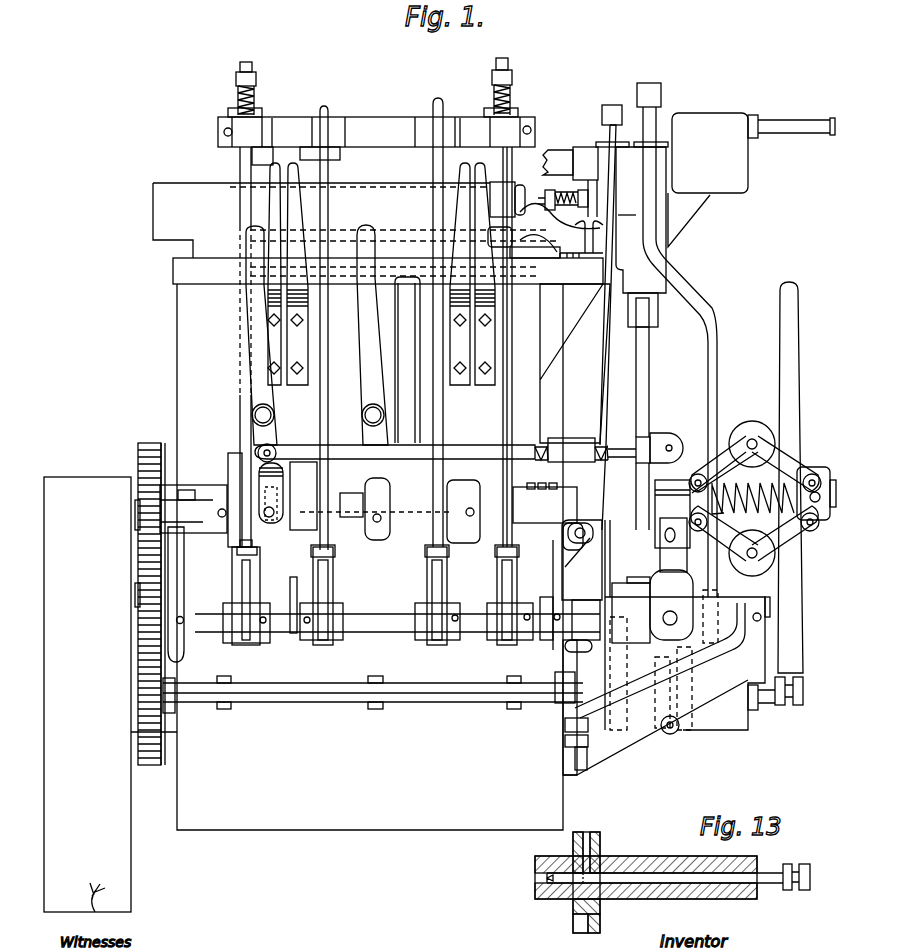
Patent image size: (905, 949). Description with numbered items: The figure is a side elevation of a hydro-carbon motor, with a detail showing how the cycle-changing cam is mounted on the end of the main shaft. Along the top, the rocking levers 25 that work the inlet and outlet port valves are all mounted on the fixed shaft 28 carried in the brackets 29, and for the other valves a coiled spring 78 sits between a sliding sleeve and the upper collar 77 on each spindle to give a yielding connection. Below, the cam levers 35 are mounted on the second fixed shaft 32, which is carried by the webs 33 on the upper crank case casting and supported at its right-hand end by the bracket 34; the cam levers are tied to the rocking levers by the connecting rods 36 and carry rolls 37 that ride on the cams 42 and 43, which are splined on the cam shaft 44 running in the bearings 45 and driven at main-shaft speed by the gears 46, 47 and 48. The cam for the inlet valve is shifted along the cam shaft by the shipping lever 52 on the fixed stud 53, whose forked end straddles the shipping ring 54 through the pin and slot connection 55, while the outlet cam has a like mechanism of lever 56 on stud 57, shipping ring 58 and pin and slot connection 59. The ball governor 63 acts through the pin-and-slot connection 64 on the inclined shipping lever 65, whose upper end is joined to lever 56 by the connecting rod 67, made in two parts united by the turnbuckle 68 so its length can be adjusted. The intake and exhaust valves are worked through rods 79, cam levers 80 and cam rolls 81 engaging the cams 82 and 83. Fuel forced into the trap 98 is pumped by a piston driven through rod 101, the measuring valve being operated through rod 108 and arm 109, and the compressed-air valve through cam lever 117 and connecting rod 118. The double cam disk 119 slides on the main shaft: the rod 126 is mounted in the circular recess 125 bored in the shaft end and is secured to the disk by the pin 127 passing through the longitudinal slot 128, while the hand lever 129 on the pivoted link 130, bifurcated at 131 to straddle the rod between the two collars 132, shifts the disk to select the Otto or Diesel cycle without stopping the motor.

In FIG. 1, the rocking levers 25 is at (328, 108).
In FIG. 1, the fixed shaft 28 is at (370, 135).
In FIG. 1, the brackets 29 is at (376, 132).
In FIG. 1, the fixed shaft 32 is at (397, 618).
In FIG. 1, the webs 33 is at (183, 595).
In FIG. 1, the bracket 34 is at (666, 686).
In FIG. 1, the cam levers 35 is at (323, 596).
In FIG. 1, the connecting rods 36 is at (323, 368).
In FIG. 1, the rolls 37 is at (318, 600).
In FIG. 1, the cam 42 is at (375, 522).
In FIG. 1, the cam 43 is at (303, 496).
In FIG. 1, the cam shaft 44 is at (460, 512).
In FIG. 1, the bearings 45 is at (200, 485).
In FIG. 1, the gear 46 is at (140, 690).
In FIG. 1, the gear 47 is at (140, 603).
In FIG. 1, the gear 48 is at (140, 452).
In FIG. 1, the shipping lever 52 is at (370, 312).
In FIG. 1, the fixed stud 53 is at (366, 415).
In FIG. 1, the shipping ring 54 is at (377, 540).
In FIG. 1, the pin and slot connection 55 is at (372, 515).
In FIG. 1, the lever 56 is at (258, 326).
In FIG. 1, the stud 57 is at (254, 415).
In FIG. 1, the shipping ring 58 is at (273, 538).
In FIG. 1, the pin and slot connection 59 is at (274, 508).
In FIG. 1, the ball governor 63 is at (752, 424).
In FIG. 1, the pin-and-slot connection 64 is at (668, 535).
In FIG. 1, the inclined shipping lever 65 is at (668, 478).
In FIG. 1, the connecting rod 67 is at (458, 452).
In FIG. 1, the turnbuckle 68 is at (566, 440).
In FIG. 1, the collar 77 is at (256, 78).
In FIG. 1, the coiled spring 78 is at (238, 100).
In FIG. 1, the rods 79 is at (513, 385).
In FIG. 1, the cam levers 80 is at (250, 578).
In FIG. 1, the cam rolls 81 is at (236, 600).
In FIG. 1, the cam 82 is at (466, 587).
In FIG. 1, the cam 83 is at (235, 550).
In FIG. 1, the trap 98 is at (561, 202).
In FIG. 1, the rod 101 is at (650, 362).
In FIG. 1, the rod 108 is at (718, 325).
In FIG. 1, the arm 109 is at (661, 95).
In FIG. 1, the cam lever 117 is at (575, 672).
In FIG. 1, the connecting rod 118 is at (612, 405).
In FIG. 1, the cam disk 119 is at (575, 646).
In FIG. 13, the cam disk 119 is at (597, 852).
In FIG. 13, the circular recess 125 is at (535, 873).
In FIG. 13, the rod 126 is at (628, 881).
In FIG. 13, the pin 127 is at (588, 830).
In FIG. 13, the longitudinal slot 128 is at (604, 856).
In FIG. 1, the hand lever 129 is at (789, 284).
In FIG. 1, the pivoted link 130 is at (790, 540).
In FIG. 1, the bifurcated end 131 is at (797, 680).
In FIG. 1, the collars 132 is at (798, 706).
In FIG. 13, the collars 132 is at (803, 890).